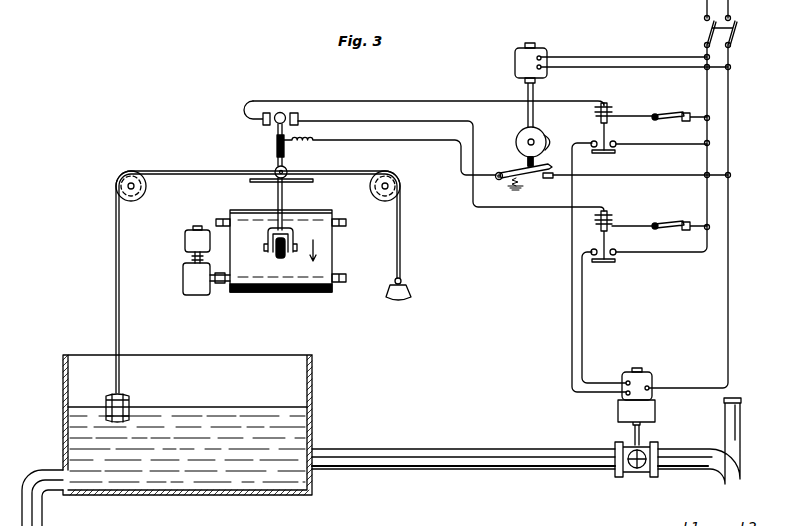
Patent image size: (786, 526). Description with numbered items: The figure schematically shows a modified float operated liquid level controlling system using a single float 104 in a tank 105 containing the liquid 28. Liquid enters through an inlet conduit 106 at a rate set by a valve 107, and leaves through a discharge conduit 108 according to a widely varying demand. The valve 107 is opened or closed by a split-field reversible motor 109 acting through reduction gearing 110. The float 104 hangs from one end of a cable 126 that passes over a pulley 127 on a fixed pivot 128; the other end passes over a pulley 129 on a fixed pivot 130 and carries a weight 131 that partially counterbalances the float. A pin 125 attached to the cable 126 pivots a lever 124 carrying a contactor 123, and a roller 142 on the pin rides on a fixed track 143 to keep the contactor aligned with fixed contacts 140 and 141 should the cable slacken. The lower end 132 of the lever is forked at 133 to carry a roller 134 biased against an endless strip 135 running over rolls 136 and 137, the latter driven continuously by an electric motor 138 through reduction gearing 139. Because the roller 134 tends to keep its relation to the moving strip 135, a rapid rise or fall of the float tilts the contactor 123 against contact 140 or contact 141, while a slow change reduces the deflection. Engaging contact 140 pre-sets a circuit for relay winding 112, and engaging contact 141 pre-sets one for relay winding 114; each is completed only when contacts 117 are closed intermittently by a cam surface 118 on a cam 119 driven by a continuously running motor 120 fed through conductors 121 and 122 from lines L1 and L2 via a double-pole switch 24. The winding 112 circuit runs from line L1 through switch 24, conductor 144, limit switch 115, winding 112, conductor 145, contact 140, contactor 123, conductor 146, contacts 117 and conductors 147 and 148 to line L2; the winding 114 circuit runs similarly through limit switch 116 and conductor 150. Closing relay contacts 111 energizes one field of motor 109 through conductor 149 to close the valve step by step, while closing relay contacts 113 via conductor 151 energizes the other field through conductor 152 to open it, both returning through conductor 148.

The double-pole switch 24 is at (705, 38).
The liquid 28 is at (222, 407).
The float 104 is at (130, 395).
The tank 105 is at (312, 390).
The inlet conduit 106 is at (392, 449).
The valve 107 is at (645, 472).
The conduit 108 is at (42, 510).
The split-field reversible motor 109 is at (652, 380).
The reduction gearing 110 is at (618, 412).
The normally open contacts 111 is at (616, 262).
The operating winding 112 is at (614, 212).
The normally open contacts 113 is at (617, 154).
The operating winding 114 is at (612, 104).
The limit switch 115 is at (680, 221).
The limit switch 116 is at (678, 112).
The normally open contacts 117 is at (543, 180).
The cam surface 118 is at (550, 136).
The cam 119 is at (519, 132).
The electric motor 120 is at (515, 63).
The conductor 121 is at (595, 49).
The conductor 122 is at (583, 68).
The contactor 123 is at (280, 112).
The lever 124 is at (277, 137).
The pin 125 is at (276, 169).
The cable 126 is at (193, 171).
The pulley 127 is at (125, 172).
The fixed pivot 128 is at (117, 189).
The pulley 129 is at (393, 164).
The fixed pivot 130 is at (389, 186).
The weight 131 is at (412, 292).
The lower end of lever 132 is at (283, 195).
The fork 133 is at (292, 232).
The roller 134 is at (278, 258).
The strip 135 is at (333, 256).
The roll 136 is at (347, 222).
The roll 137 is at (333, 287).
The electric motor 138 is at (185, 240).
The reduction gearing 139 is at (183, 278).
The fixed contact 140 is at (298, 112).
The fixed contact 141 is at (264, 112).
The roller 142 is at (289, 170).
The fixed plate or track 143 is at (250, 181).
The conductor 144 is at (710, 93).
The conductor 145 is at (493, 208).
The conductor 146 is at (460, 150).
The conductor 147 is at (612, 177).
The conductor 148 is at (729, 145).
The conductor 149 is at (583, 315).
The conductor 150 is at (440, 100).
The conductor 151 is at (660, 145).
The conductor 152 is at (570, 277).
The line L1 is at (705, 17).
The line L2 is at (730, 17).